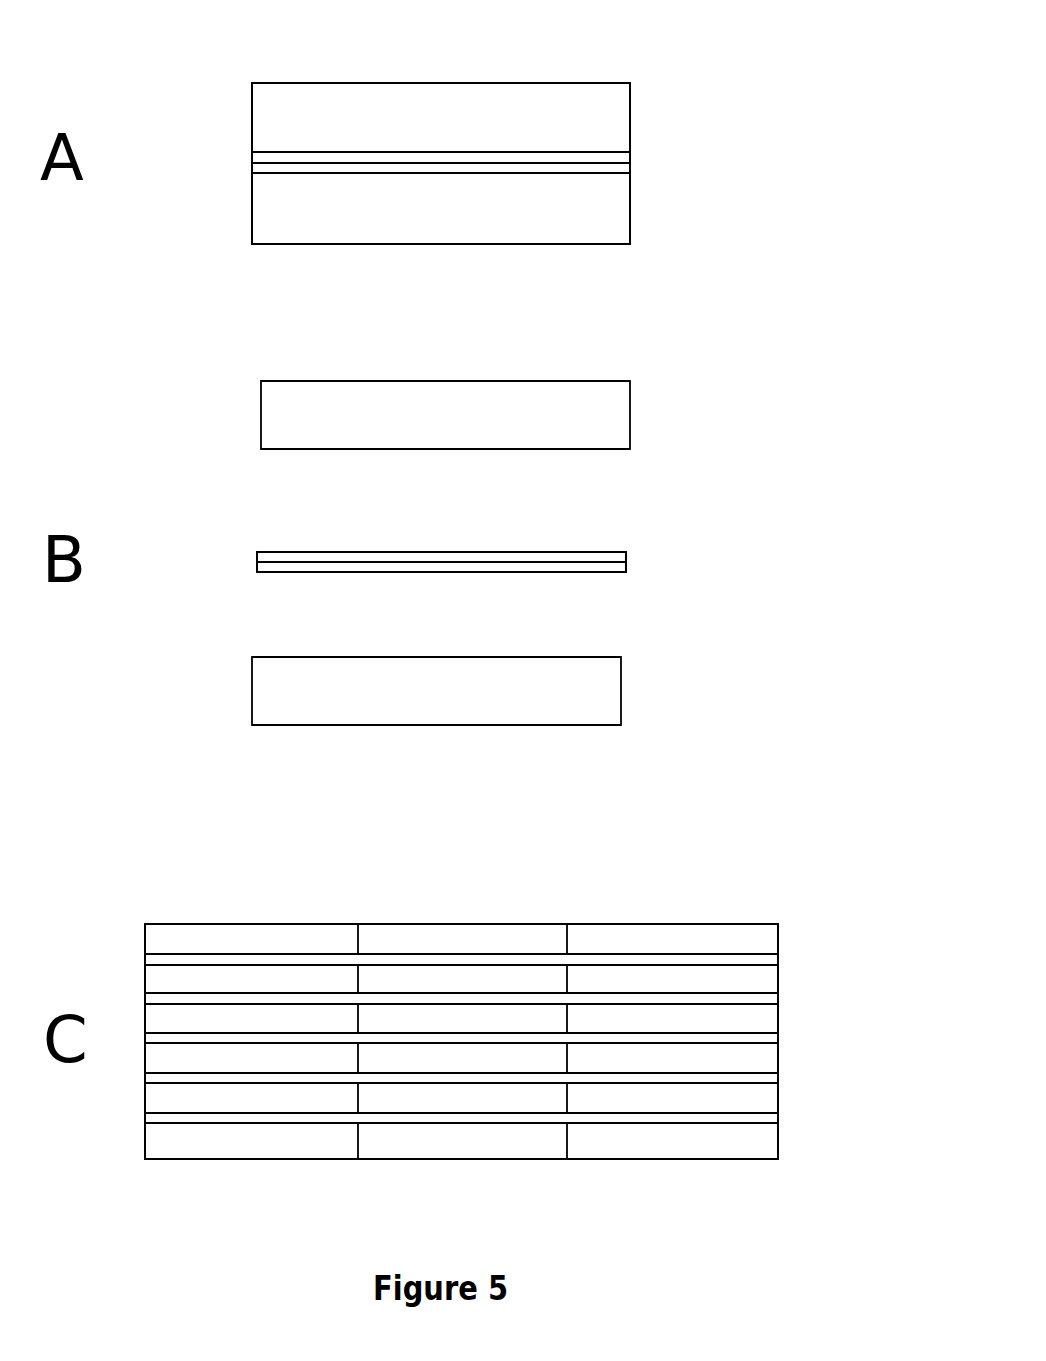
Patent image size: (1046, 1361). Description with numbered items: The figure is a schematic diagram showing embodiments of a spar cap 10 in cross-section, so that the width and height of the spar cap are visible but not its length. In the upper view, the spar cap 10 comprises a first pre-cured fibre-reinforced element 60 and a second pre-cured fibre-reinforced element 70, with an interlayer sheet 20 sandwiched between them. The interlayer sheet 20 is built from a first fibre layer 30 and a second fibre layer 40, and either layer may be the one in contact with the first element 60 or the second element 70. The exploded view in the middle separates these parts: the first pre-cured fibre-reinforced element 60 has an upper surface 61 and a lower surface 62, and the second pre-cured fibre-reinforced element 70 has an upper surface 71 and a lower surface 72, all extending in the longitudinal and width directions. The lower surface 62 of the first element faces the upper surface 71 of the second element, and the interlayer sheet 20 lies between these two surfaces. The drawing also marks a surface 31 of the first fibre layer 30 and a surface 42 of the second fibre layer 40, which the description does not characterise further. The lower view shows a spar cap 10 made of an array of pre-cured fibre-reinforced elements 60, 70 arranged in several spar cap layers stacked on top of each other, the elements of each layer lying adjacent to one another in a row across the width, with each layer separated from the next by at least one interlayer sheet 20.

The spar cap 10 is at (601, 53).
The interlayer sheet 20 is at (655, 155).
The first fibre layer 30 is at (383, 157).
The top surface of first layer 31 is at (547, 553).
The second fibre layer 40 is at (446, 167).
The bottom surface of second layer 42 is at (313, 572).
The first pre-cured fibre-reinforced element 60 is at (608, 128).
The upper surface of the first pre-cured fibre-reinforced element 61 is at (520, 380).
The lower surface of the first pre-cured fibre-reinforced element 62 is at (415, 449).
The second pre-cured fibre-reinforced element 70 is at (617, 208).
The upper surface of the second pre-cured fibre-reinforced element 71 is at (507, 655).
The lower surface of the second pre-cured fibre-reinforced element 72 is at (399, 725).